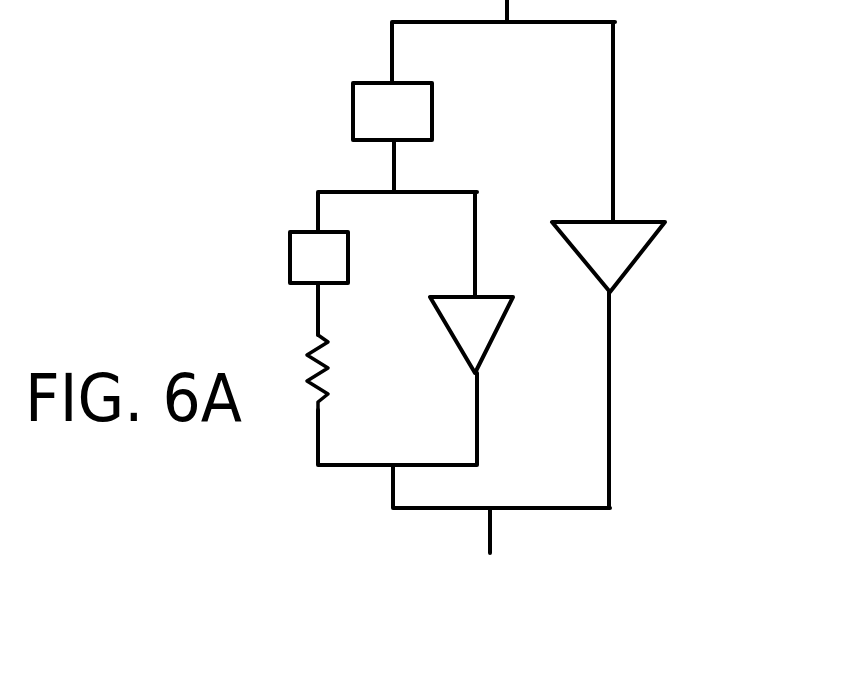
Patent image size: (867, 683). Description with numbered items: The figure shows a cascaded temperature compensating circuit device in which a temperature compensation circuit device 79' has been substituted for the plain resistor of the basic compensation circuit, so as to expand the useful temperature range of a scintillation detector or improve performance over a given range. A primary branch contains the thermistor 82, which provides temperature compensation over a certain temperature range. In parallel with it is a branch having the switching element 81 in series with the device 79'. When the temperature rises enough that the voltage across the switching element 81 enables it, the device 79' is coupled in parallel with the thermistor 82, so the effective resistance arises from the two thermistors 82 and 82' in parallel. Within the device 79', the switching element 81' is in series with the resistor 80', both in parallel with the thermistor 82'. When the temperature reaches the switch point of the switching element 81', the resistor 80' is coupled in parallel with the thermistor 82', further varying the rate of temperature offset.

The temperature compensation circuit device 79' is at (366, 276).
The switching element 81 is at (340, 111).
The switching element 81' is at (269, 252).
The resistor 80' is at (369, 376).
The thermistor 82' is at (501, 337).
The thermistor 82 is at (639, 257).